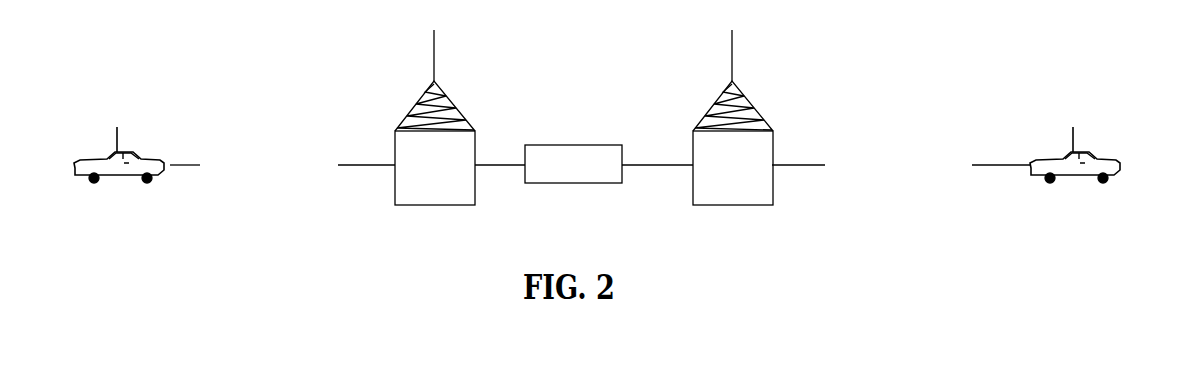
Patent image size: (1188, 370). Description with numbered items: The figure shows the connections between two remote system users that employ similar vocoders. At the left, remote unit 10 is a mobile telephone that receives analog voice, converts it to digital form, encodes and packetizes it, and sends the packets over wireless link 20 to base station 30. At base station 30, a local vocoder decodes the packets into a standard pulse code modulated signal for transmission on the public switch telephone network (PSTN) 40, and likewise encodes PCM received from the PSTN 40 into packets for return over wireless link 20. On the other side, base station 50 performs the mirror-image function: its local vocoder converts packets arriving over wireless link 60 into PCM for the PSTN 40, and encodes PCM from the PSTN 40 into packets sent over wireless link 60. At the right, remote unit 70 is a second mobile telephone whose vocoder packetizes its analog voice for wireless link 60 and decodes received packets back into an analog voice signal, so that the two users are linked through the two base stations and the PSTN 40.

The remote unit 10 is at (130, 178).
The wireless link 20 is at (275, 153).
The base station 30 is at (418, 101).
The public switch telephone network (PSTN) 40 is at (557, 145).
The base station 50 is at (716, 101).
The wireless link 60 is at (900, 153).
The remote unit 70 is at (1088, 178).